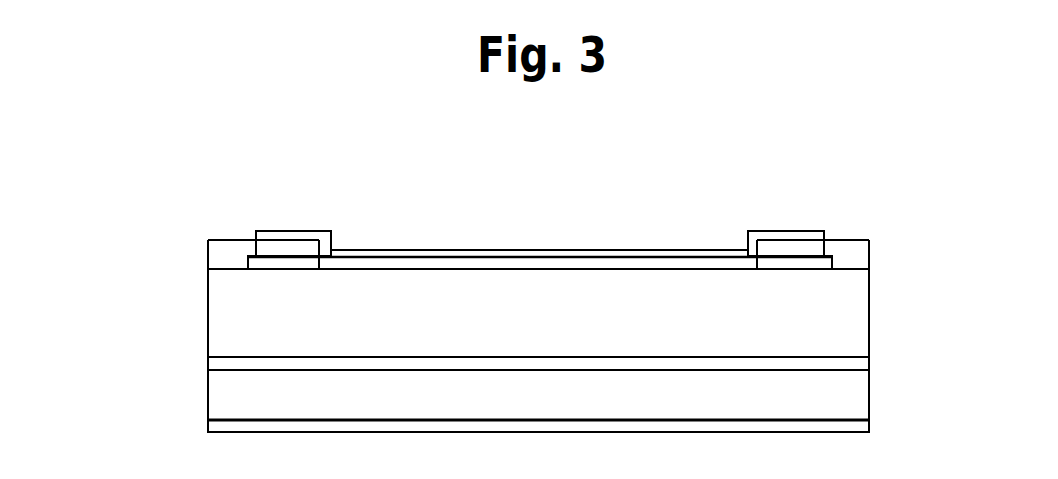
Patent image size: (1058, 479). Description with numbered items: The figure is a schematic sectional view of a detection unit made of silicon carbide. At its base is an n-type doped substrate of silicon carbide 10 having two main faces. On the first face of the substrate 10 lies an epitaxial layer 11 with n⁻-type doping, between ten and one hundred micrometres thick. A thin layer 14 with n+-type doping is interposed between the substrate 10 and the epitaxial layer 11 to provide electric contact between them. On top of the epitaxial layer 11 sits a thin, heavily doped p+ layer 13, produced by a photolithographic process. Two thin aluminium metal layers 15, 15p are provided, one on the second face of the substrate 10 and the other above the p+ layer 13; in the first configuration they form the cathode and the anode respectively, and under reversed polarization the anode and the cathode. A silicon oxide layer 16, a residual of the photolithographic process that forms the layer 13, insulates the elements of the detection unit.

The substrate of silicon carbide 10 is at (217, 412).
The epitaxial layer 11 is at (217, 314).
The layer characterized by p+-type doping 13 is at (832, 262).
The layer characterized by n+-type doping 14 is at (217, 367).
The metal layer 15 is at (833, 433).
The metal layer 15p is at (643, 249).
The layer made of silicon oxide 16 is at (210, 257).